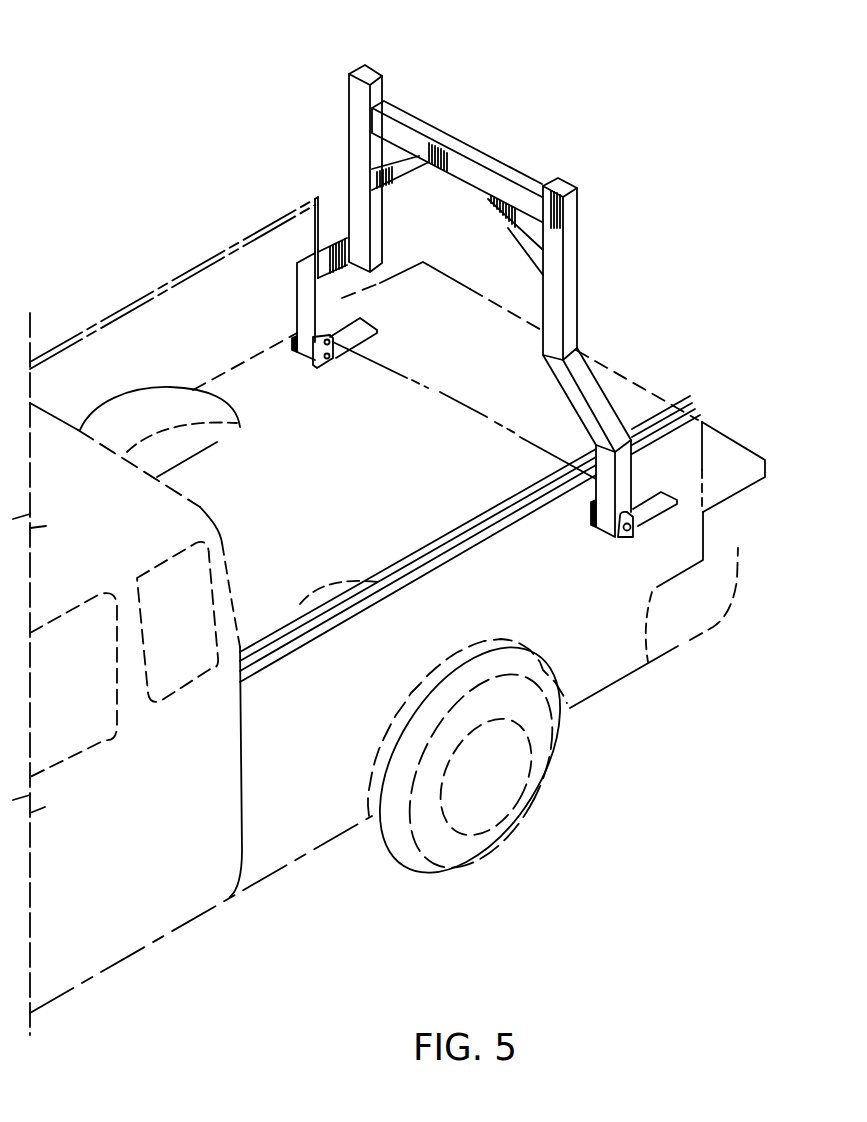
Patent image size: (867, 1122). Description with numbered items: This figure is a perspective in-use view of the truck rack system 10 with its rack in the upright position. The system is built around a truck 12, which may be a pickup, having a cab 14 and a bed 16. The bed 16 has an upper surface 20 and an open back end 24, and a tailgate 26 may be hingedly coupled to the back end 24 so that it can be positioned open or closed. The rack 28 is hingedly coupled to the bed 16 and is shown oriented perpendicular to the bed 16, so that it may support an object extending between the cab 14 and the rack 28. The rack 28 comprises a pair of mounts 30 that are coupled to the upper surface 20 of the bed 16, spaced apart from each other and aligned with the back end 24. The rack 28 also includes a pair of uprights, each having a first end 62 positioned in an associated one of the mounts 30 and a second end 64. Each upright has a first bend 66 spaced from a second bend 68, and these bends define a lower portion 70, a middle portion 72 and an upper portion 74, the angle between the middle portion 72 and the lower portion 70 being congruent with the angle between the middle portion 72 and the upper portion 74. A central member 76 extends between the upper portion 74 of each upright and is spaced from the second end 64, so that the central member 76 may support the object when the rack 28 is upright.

The truck rack system 10 is at (201, 88).
The truck 12 is at (118, 298).
The cab 14 is at (63, 420).
The bed 16 is at (253, 357).
The upper surface 20 is at (410, 410).
The back end 24 is at (702, 422).
The tailgate 26 is at (742, 489).
The rack 28 is at (456, 121).
The mounts 30 is at (330, 335).
The first end 62 is at (605, 540).
The second end 64 is at (556, 183).
The first bend 66 is at (297, 262).
The second bend 68 is at (348, 238).
The lower portion 70 is at (632, 445).
The middle portion 72 is at (592, 372).
The upper portion 74 is at (567, 233).
The central member 76 is at (413, 114).